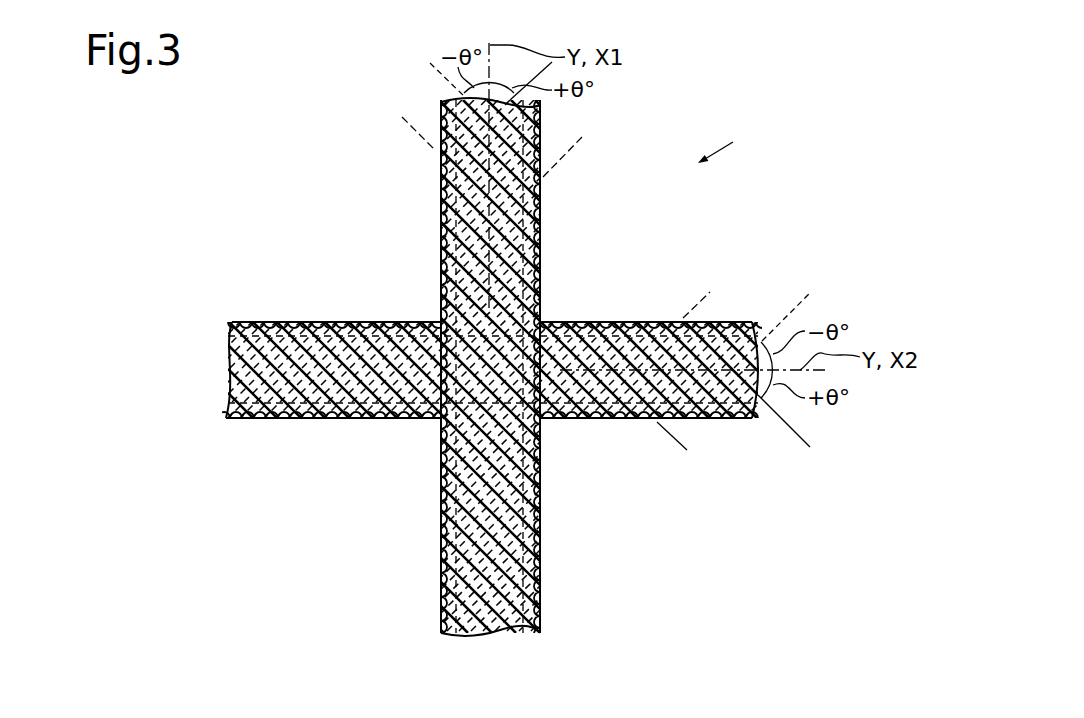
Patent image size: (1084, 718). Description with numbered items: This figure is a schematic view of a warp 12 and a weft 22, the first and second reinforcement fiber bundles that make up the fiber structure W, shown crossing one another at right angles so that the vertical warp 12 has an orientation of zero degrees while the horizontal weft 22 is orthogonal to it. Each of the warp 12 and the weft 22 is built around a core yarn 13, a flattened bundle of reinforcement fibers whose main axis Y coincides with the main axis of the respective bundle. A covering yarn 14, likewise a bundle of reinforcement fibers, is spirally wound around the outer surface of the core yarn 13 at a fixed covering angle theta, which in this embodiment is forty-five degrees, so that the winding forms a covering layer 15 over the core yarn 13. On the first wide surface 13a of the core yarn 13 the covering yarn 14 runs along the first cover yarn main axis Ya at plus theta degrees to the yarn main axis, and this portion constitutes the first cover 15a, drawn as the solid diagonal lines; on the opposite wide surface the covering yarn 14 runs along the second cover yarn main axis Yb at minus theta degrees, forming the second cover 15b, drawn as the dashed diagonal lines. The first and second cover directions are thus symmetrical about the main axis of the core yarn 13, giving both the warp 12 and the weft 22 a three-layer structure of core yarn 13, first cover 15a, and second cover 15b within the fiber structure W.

The warp 12 is at (488, 394).
The core yarn 13 is at (440, 623).
The first wide surface 13a is at (517, 637).
The covering yarn 14 is at (248, 322).
The covering layer 15 is at (232, 347).
The first cover 15a is at (297, 322).
The second cover 15b is at (350, 322).
The weft 22 is at (222, 397).
The fiber structure W is at (727, 146).
The first cover yarn main axis Ya is at (551, 170).
The second cover yarn main axis Yb is at (418, 133).